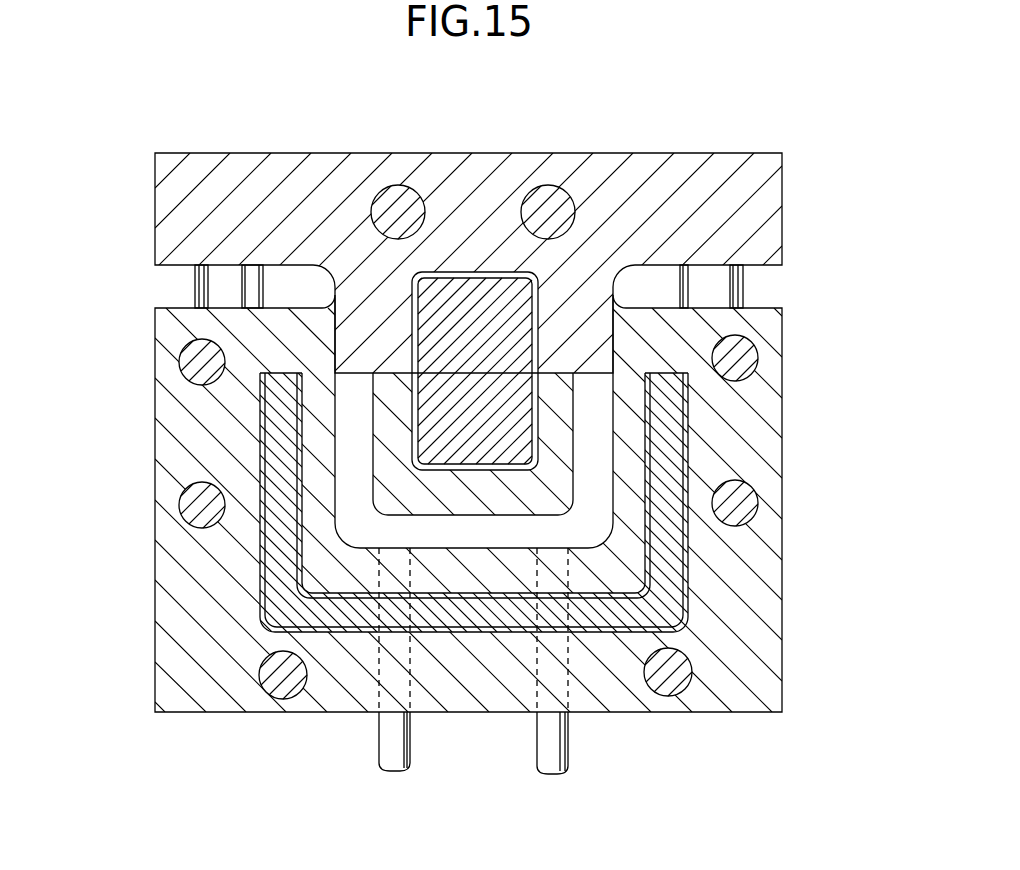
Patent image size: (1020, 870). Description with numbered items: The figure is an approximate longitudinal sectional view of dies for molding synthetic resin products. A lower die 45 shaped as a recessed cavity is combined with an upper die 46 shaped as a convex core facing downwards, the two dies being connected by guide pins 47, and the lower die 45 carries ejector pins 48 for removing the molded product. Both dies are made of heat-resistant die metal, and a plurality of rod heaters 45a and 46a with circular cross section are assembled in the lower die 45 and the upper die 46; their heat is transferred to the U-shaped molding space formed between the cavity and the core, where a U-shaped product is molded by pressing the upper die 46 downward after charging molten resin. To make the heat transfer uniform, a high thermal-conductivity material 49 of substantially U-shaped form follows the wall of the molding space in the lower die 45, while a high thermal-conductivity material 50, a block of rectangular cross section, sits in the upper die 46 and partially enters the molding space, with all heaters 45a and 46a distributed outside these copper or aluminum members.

The lower die 45 is at (752, 618).
The heaters 45a is at (750, 360).
The upper die 46 is at (752, 218).
The heaters 46a is at (548, 205).
The guide pins 47 is at (210, 286).
The ejector pins 48 is at (556, 738).
The high thermal-conductivity material 49 is at (345, 622).
The high thermal-conductivity material 50 is at (470, 297).